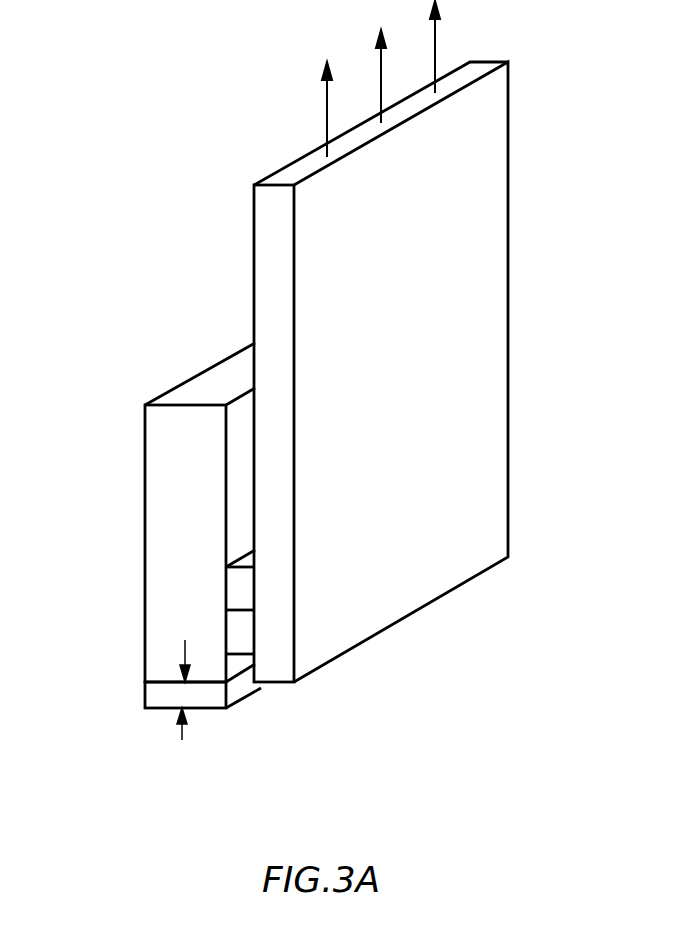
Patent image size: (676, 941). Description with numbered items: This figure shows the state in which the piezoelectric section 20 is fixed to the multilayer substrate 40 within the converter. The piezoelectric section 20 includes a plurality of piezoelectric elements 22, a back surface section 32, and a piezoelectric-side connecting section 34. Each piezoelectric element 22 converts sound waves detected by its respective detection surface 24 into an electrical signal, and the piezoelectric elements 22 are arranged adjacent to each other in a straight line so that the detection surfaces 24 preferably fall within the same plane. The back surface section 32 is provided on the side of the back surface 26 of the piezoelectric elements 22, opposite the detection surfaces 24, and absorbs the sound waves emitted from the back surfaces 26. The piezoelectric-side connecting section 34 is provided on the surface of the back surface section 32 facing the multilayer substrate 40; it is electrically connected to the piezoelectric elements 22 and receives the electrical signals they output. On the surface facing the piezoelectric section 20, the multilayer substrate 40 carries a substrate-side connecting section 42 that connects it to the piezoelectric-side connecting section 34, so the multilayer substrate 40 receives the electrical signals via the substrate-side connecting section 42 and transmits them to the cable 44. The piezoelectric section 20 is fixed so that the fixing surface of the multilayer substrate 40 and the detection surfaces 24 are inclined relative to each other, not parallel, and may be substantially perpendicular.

The piezoelectric section 20 is at (150, 558).
The piezoelectric element 22 is at (170, 702).
The detection surface 24 is at (182, 740).
The back surface 26 is at (185, 645).
The back surface section 32 is at (157, 612).
The piezoelectric-side connecting section 34 is at (240, 563).
The multilayer substrate 40 is at (508, 433).
The substrate-side connecting section 42 is at (240, 655).
The cable 44 is at (325, 117).